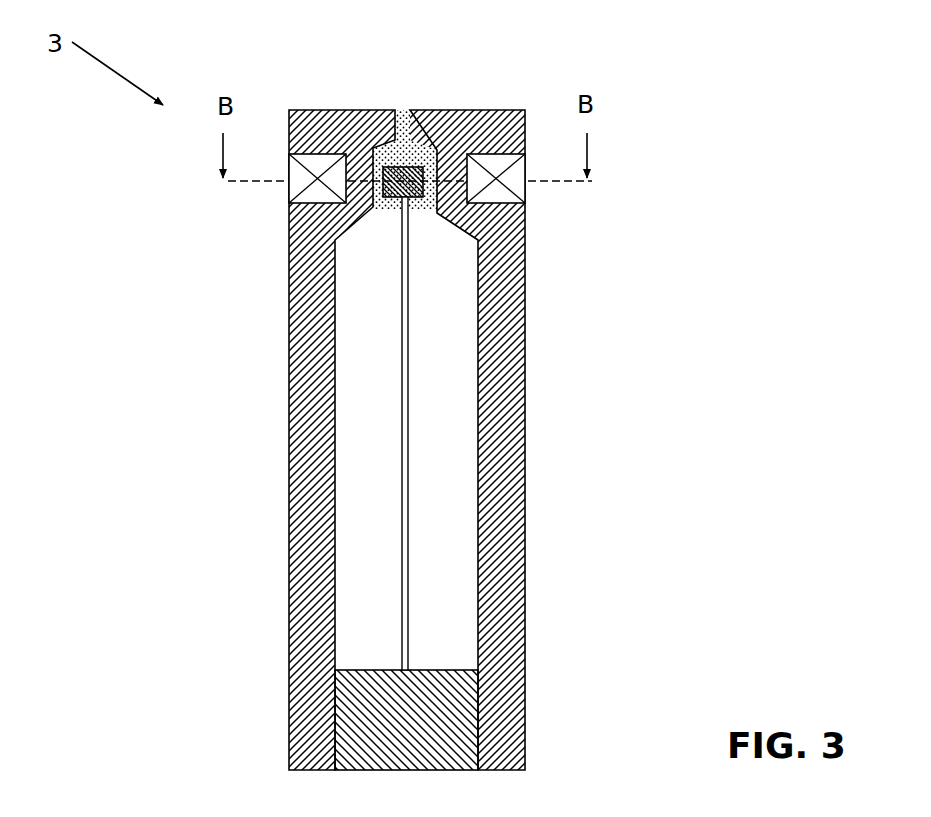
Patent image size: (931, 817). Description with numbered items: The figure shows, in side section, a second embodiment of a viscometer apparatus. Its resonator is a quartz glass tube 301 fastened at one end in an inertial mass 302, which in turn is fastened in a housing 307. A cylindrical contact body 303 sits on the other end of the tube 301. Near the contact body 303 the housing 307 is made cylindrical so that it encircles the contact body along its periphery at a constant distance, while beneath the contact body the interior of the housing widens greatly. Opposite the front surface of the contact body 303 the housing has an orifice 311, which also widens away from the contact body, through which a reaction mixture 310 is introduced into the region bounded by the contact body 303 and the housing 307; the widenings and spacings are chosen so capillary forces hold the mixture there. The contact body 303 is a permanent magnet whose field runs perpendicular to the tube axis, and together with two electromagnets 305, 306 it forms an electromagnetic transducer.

The quartz glass tube 301 is at (408, 410).
The inertial mass 302 is at (455, 725).
The contact body 303 is at (447, 108).
The electromagnet 305 is at (290, 187).
The electromagnet 306 is at (507, 192).
The housing 307 is at (517, 522).
The reaction mixture 310 is at (370, 163).
The orifice 311 is at (407, 117).